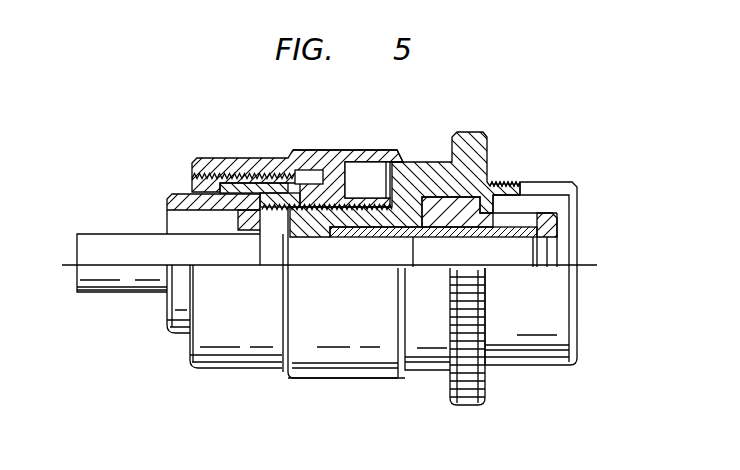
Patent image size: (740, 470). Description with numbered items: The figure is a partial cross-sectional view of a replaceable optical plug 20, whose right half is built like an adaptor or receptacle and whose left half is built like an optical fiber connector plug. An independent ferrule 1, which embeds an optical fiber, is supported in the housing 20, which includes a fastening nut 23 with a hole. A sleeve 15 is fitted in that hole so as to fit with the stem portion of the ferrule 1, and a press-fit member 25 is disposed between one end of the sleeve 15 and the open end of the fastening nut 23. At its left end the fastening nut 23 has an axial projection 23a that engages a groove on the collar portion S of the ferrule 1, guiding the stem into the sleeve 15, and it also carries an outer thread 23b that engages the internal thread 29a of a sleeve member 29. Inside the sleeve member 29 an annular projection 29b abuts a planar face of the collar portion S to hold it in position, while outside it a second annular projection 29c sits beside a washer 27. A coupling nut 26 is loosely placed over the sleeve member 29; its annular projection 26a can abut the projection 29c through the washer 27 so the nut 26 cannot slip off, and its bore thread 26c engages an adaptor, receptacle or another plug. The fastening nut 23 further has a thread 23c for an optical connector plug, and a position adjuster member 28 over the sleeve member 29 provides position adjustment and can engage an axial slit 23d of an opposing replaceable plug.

The independent ferrule 1 is at (77, 247).
The sleeve 15 is at (510, 240).
The plug 20 is at (557, 96).
The fastening nut 23 is at (470, 131).
The axial projection 23a is at (289, 238).
The thread 23b is at (356, 212).
The thread 23c is at (510, 183).
The axial slit 23d is at (555, 186).
The press-fit member 25 is at (552, 225).
The coupling nut 26 is at (194, 157).
The annular projection 26a is at (333, 178).
The thread 26c is at (192, 180).
The washer 27 is at (300, 176).
The position adjuster member 28 is at (235, 184).
The sleeve member 29 is at (167, 202).
The internal thread 29a is at (376, 188).
The annular projection 29b is at (245, 227).
The second annular projection 29c is at (287, 184).
The collar portion S is at (273, 262).